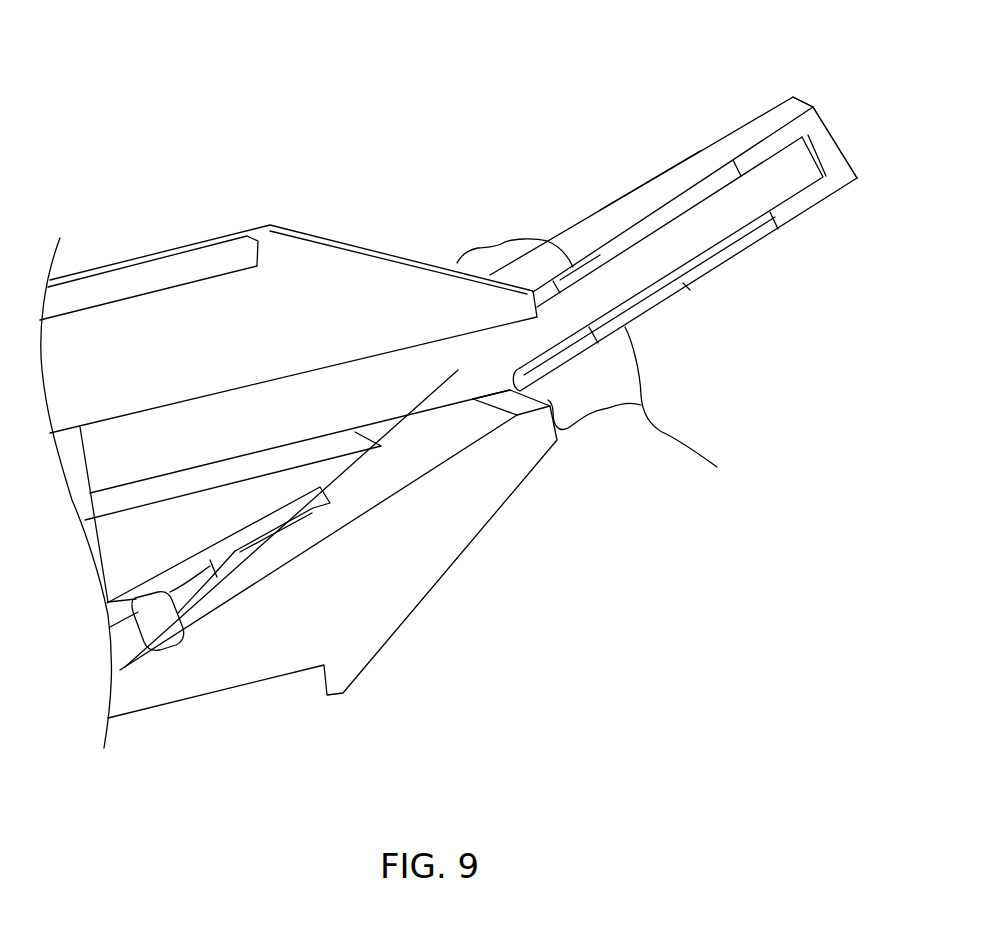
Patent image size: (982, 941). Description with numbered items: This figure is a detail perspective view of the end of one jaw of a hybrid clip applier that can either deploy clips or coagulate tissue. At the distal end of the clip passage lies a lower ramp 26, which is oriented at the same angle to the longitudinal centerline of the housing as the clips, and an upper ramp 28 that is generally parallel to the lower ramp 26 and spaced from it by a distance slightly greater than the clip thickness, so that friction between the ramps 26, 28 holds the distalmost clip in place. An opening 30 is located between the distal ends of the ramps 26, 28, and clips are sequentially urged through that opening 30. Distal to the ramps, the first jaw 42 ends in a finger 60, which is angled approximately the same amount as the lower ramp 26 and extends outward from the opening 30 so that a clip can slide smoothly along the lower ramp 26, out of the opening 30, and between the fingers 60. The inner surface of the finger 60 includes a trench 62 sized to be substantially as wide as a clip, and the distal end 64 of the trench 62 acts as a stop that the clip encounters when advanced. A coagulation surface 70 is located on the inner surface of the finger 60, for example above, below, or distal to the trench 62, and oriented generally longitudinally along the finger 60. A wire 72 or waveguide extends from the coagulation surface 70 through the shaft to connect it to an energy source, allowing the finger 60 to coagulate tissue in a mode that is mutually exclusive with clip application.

The lower ramp 26 is at (373, 490).
The upper ramp 28 is at (357, 463).
The opening 30 is at (467, 401).
The first jaw 42 is at (640, 185).
The finger 60 is at (830, 122).
The trench 62 is at (702, 232).
The distal end of trench 64 is at (808, 163).
The coagulation surface 70 is at (617, 247).
The wire 72 is at (512, 240).